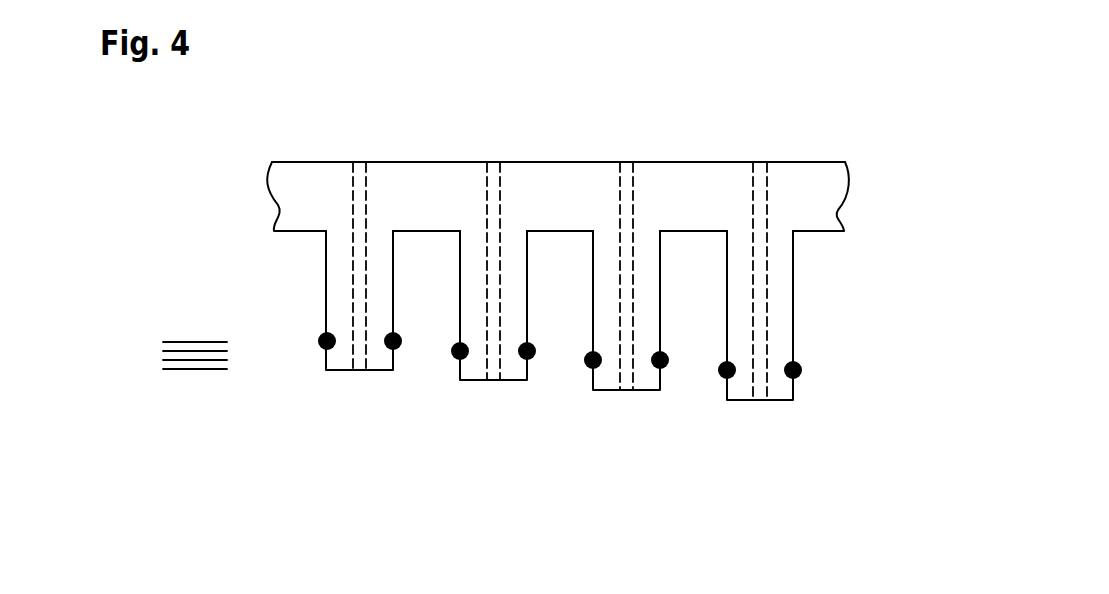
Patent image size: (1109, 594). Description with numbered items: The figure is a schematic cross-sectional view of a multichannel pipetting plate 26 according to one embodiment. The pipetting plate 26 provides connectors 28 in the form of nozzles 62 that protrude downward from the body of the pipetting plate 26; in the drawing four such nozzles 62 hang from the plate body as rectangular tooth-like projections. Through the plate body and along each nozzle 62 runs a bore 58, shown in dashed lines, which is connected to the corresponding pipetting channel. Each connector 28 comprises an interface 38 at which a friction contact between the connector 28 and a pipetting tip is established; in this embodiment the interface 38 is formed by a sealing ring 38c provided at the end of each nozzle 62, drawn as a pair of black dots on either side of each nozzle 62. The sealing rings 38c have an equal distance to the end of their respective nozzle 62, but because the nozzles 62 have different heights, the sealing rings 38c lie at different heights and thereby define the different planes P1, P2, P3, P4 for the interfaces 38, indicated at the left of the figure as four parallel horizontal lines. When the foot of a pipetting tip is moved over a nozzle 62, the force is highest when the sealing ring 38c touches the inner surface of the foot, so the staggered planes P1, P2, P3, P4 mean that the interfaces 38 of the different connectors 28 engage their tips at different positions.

The pipetting plate 26 is at (878, 103).
The connector 28 is at (541, 377).
The nozzle 62 is at (345, 419).
The bore 58 is at (361, 170).
The interface 38 is at (520, 385).
The sealing ring 38c is at (320, 337).
The plane P1 is at (178, 369).
The plane P2 is at (165, 360).
The plane P3 is at (165, 351).
The plane P4 is at (178, 342).